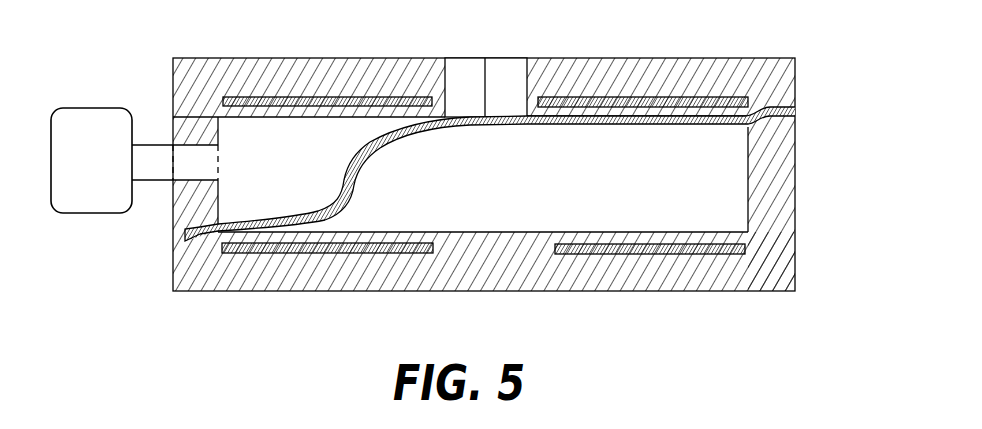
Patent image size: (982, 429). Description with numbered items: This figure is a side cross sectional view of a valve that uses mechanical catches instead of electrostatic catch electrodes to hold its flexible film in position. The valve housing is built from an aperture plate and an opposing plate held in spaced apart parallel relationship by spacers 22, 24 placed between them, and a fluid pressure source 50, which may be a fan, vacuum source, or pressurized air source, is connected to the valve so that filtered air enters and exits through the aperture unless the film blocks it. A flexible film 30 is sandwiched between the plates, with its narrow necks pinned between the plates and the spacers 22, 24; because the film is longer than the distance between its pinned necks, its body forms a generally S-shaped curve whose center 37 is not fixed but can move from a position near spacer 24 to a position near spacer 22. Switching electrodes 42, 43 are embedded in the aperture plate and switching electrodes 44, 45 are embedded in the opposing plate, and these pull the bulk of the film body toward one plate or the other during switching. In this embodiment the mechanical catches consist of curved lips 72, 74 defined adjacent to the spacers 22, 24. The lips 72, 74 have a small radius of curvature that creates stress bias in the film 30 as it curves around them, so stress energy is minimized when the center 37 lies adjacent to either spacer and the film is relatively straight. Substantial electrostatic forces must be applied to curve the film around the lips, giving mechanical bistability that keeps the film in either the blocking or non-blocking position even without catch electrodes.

The spacer 22 is at (182, 204).
The spacer 24 is at (775, 200).
The flexible film 30 is at (378, 135).
The center of the S-curve 37 is at (345, 172).
The switching electrode 42 is at (306, 97).
The switching electrode 43 is at (608, 100).
The switching electrode 44 is at (287, 253).
The switching electrode 45 is at (575, 250).
The fluid pressure source 50 is at (107, 174).
The curved lip 72 is at (200, 240).
The curved lip 74 is at (767, 110).